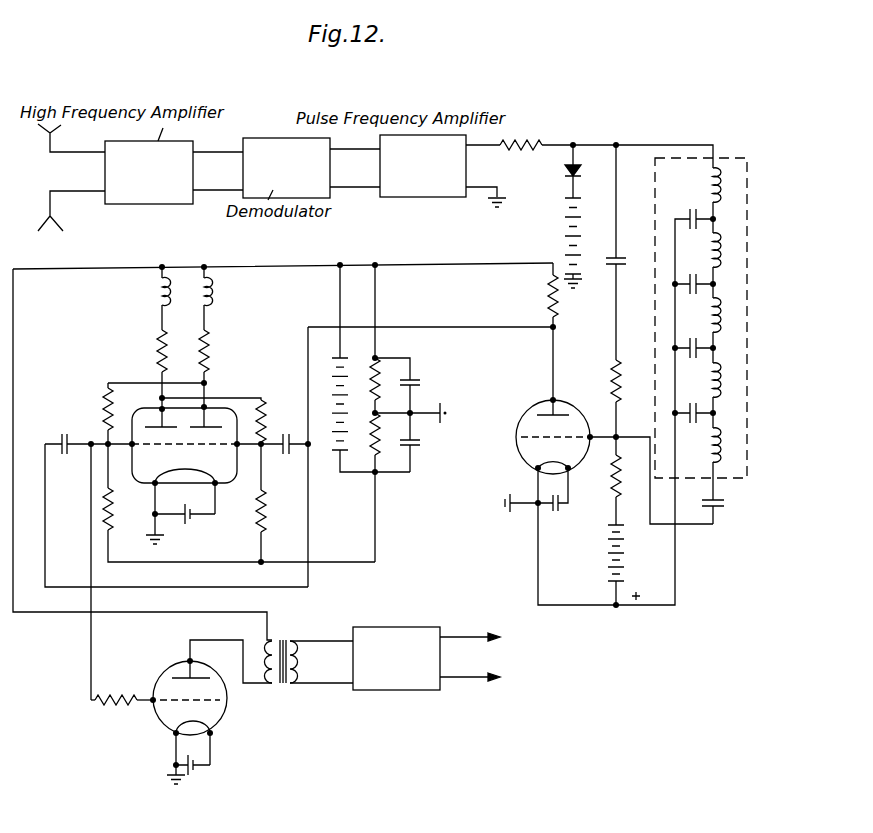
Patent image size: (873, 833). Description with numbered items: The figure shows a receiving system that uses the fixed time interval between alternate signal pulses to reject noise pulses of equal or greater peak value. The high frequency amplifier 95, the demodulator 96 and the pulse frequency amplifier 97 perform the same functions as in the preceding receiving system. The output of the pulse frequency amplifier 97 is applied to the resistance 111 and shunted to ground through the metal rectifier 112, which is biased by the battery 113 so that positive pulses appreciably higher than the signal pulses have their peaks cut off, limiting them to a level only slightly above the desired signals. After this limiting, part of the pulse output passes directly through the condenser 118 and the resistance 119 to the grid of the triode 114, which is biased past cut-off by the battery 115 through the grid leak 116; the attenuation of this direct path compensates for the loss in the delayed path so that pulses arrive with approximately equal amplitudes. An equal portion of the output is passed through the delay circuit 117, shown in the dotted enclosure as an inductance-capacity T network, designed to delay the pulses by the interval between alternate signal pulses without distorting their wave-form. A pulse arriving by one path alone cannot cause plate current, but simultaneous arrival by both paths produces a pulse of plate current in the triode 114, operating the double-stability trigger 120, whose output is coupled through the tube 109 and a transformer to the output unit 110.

The high frequency amplifier 95 is at (149, 172).
The demodulator 96 is at (286, 168).
The pulse frequency amplifier 97 is at (423, 166).
The tube 109 is at (168, 672).
The output unit 110 is at (396, 658).
The resistance 111 is at (537, 141).
The metal rectifier 112 is at (565, 169).
The battery 113 is at (562, 224).
The triode 114 is at (530, 410).
The battery 115 is at (613, 560).
The grid leak 116 is at (615, 481).
The delay circuit 117 is at (733, 477).
The condenser 118 is at (619, 268).
The resistance 119 is at (615, 381).
The double-stability trigger 120 is at (218, 405).